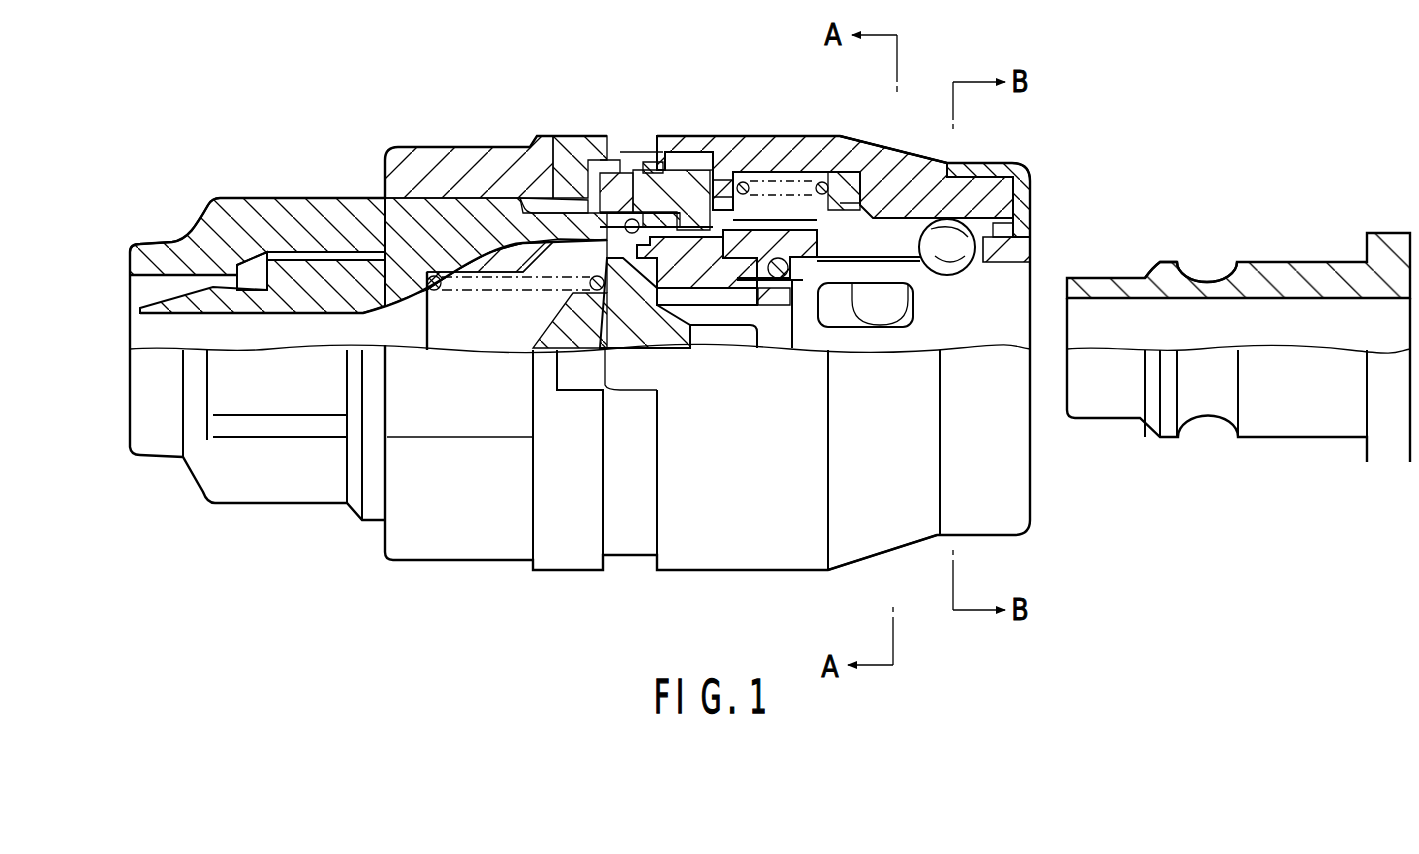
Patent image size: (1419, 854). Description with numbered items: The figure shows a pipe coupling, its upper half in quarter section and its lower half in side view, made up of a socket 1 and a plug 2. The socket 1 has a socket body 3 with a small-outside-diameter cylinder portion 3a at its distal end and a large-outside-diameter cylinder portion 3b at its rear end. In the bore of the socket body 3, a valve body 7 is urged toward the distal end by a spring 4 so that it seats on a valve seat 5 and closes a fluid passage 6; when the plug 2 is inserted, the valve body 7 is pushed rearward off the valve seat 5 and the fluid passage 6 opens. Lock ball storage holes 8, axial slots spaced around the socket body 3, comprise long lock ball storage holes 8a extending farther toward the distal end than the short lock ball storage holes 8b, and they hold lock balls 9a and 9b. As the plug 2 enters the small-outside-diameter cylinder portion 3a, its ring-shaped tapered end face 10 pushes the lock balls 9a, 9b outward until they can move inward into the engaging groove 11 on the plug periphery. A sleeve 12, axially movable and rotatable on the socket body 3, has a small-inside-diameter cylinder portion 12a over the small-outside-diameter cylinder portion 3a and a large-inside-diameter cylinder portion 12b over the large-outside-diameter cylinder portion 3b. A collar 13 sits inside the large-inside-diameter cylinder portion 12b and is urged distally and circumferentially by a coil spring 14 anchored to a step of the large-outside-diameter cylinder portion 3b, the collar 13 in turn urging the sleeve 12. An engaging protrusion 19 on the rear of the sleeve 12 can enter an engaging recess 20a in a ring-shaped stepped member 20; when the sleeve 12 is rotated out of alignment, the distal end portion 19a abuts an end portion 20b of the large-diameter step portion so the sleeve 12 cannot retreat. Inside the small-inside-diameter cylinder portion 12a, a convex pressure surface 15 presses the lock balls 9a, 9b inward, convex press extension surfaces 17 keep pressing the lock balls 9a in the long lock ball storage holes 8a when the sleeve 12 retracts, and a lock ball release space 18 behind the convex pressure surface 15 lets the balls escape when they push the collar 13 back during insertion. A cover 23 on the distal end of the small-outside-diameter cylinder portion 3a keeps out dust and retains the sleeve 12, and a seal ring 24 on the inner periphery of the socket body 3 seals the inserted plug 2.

The socket 1 is at (463, 118).
The plug 2 is at (1319, 237).
The socket body 3 is at (428, 145).
The small-outside-diameter cylinder portion 3a is at (707, 207).
The large-outside-diameter cylinder portion 3b is at (500, 146).
The spring 4 is at (490, 290).
The valve seat 5 is at (623, 207).
The fluid passage 6 is at (437, 357).
The valve body 7 is at (583, 373).
The lock ball storage holes 8 is at (843, 303).
The long lock ball storage holes 8a is at (925, 345).
The short lock ball storage holes 8b is at (865, 305).
The lock balls 9a is at (957, 273).
The lock balls 9b is at (877, 290).
The ring-shaped tapered end face 10 is at (1153, 265).
The engaging groove 11 is at (1198, 267).
The sleeve 12 is at (760, 133).
The small-inside-diameter cylinder portion 12a is at (910, 235).
The large-inside-diameter cylinder portion 12b is at (718, 148).
The collar 13 is at (843, 195).
The coil spring 14 is at (792, 180).
The convex pressure surface 15 is at (905, 185).
The convex press extension surfaces 17 is at (1027, 247).
The lock ball release space 18 is at (873, 210).
The engaging protrusion 19 is at (640, 373).
The distal end portion 19a is at (612, 373).
The ring-shaped stepped member 20 is at (568, 553).
The engaging recess 20a is at (567, 373).
The end portion of large-diameter step portion 20b is at (608, 148).
The cover 23 is at (1031, 182).
The seal ring 24 is at (780, 348).